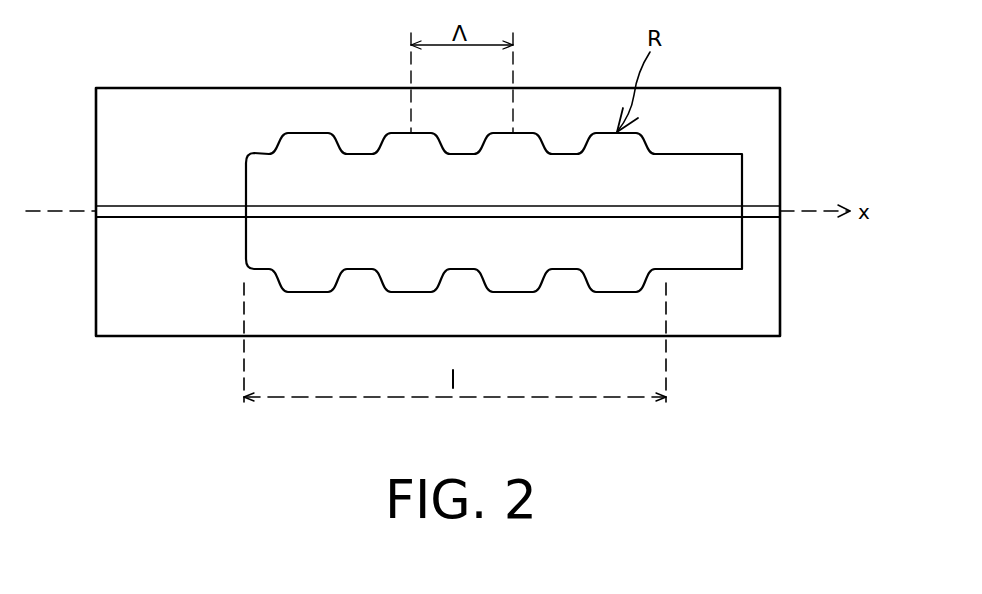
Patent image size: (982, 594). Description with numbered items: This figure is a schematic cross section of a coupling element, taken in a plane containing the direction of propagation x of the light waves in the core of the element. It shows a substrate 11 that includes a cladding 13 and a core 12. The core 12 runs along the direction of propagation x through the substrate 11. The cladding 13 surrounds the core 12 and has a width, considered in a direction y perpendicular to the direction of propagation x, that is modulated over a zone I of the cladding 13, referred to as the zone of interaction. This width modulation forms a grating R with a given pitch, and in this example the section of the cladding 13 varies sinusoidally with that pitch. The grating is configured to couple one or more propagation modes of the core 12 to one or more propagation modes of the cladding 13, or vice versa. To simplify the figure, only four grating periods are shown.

The substrate 11 is at (141, 112).
The core 12 is at (135, 216).
The cladding 13 is at (706, 257).